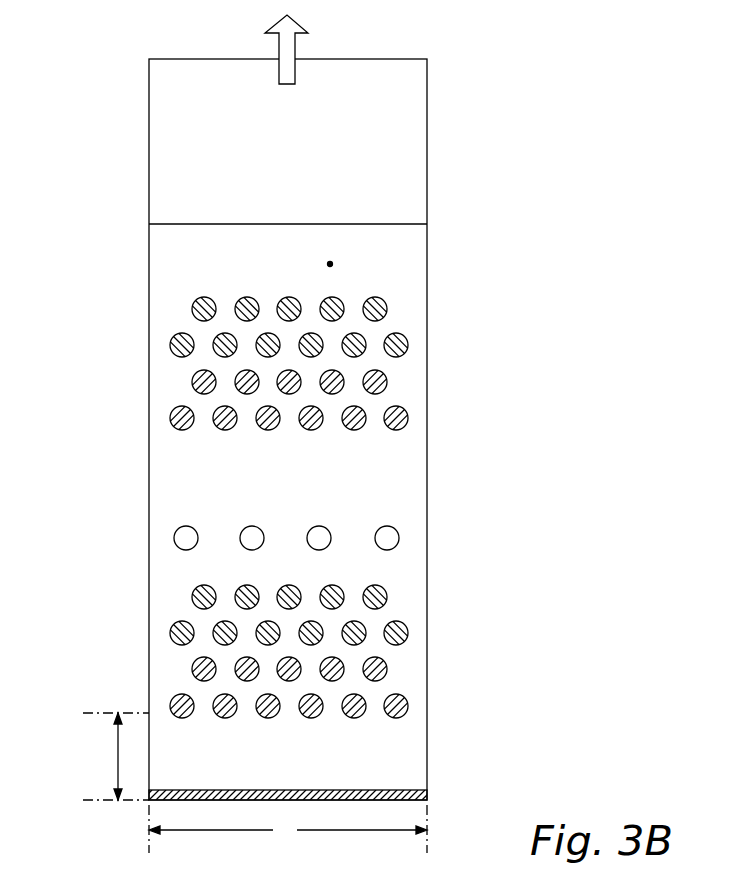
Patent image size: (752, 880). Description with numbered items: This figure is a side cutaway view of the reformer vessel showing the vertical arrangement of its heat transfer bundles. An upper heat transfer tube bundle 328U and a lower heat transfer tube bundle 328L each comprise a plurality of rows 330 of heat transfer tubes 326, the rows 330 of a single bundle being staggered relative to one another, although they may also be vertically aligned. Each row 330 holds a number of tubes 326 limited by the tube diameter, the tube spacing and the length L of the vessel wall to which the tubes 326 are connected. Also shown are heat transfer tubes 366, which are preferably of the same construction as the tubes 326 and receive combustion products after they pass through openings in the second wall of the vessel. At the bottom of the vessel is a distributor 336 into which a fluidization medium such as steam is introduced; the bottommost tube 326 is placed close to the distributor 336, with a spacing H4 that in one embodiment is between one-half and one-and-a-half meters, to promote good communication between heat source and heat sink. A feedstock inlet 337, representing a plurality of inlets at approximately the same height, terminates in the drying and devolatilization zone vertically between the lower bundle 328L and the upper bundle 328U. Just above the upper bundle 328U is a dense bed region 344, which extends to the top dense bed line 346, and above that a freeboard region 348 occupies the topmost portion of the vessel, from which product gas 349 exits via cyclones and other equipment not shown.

The freeboard region 348 is at (407, 123).
The top dense bed line 346 is at (377, 224).
The product gas 349 is at (296, 41).
The dense bed region 344 is at (333, 263).
The heat transfer tubes 366 is at (408, 345).
The rows of tubes 330 is at (392, 378).
The heat transfer tubes 326 is at (354, 430).
The upper heat transfer tube bundle 328U is at (510, 363).
The lower heat transfer tube bundle 328L is at (510, 648).
The feedstock inlet 337 is at (387, 550).
The distributor 336 is at (427, 793).
The spacing H4 is at (116, 756).
The length L is at (288, 829).